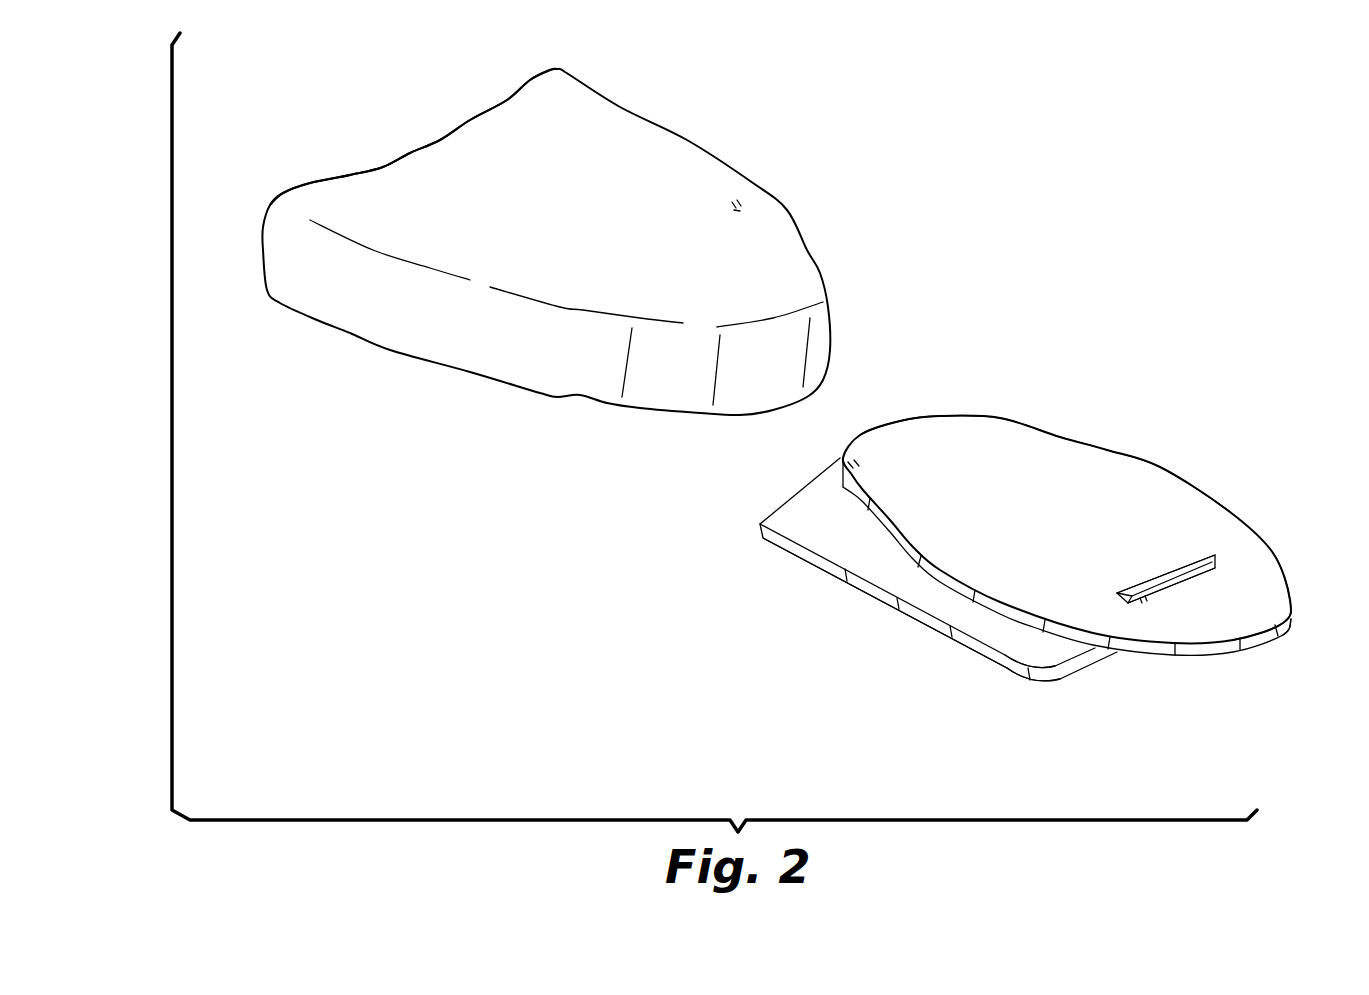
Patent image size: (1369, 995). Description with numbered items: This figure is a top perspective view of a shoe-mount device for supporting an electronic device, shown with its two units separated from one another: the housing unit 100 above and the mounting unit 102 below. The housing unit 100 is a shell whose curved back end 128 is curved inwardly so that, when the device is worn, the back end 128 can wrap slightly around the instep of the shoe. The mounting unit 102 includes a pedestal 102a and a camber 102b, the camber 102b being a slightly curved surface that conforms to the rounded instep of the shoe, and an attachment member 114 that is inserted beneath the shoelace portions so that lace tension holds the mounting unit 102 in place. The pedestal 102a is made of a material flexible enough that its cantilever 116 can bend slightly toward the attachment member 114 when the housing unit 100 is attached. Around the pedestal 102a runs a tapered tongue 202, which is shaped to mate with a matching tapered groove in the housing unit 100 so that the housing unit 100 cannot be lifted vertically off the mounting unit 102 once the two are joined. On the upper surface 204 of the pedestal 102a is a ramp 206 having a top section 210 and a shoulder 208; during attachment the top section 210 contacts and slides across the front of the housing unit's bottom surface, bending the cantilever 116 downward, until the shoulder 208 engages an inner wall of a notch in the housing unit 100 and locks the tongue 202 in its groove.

The housing unit 100 is at (795, 208).
The curved back end 128 is at (441, 141).
The mounting unit 102 is at (753, 540).
The pedestal 102a is at (1185, 483).
The camber 102b is at (918, 626).
The attachment member 114 is at (1030, 653).
The cantilever 116 is at (1280, 606).
The tapered tongue 202 is at (888, 544).
The upper surface 204 is at (985, 438).
The ramp 206 is at (1116, 594).
The shoulder 208 is at (1181, 584).
The top section 210 is at (1160, 576).